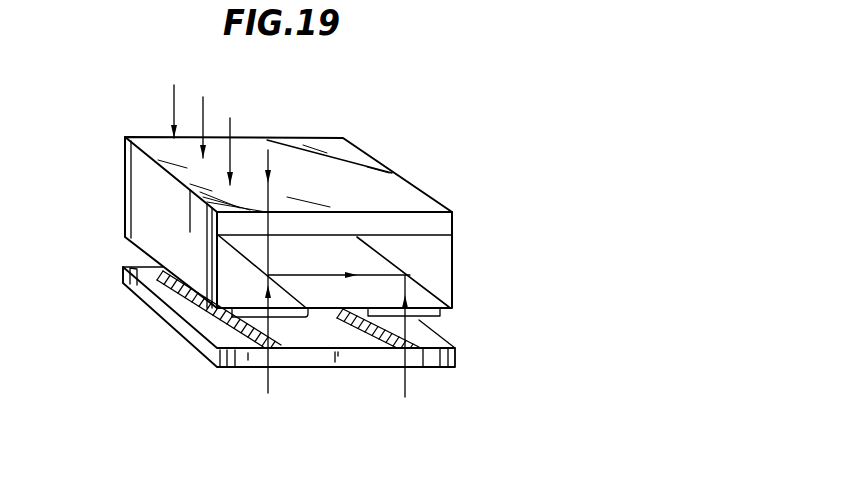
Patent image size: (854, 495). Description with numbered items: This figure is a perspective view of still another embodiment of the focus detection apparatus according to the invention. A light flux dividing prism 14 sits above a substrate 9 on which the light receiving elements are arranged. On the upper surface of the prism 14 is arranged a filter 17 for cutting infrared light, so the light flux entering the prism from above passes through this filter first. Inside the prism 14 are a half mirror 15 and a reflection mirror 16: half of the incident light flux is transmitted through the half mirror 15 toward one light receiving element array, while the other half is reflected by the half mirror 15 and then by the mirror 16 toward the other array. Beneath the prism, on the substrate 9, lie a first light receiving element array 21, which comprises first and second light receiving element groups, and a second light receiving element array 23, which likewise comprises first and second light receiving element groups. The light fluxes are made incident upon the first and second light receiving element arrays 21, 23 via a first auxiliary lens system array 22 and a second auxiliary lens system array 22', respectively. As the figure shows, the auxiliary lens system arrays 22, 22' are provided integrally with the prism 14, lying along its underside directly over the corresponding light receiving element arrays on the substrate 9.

The substrate 9 is at (133, 294).
The light flux dividing prism 14 is at (452, 253).
The half mirror 15 is at (243, 253).
The reflection mirror 16 is at (447, 297).
The filter 17 is at (390, 172).
The first light receiving element array 21 is at (220, 368).
The first auxiliary lens system array 22 is at (289, 360).
The second auxiliary lens system array 22' is at (448, 343).
The second light receiving element array 23 is at (367, 347).